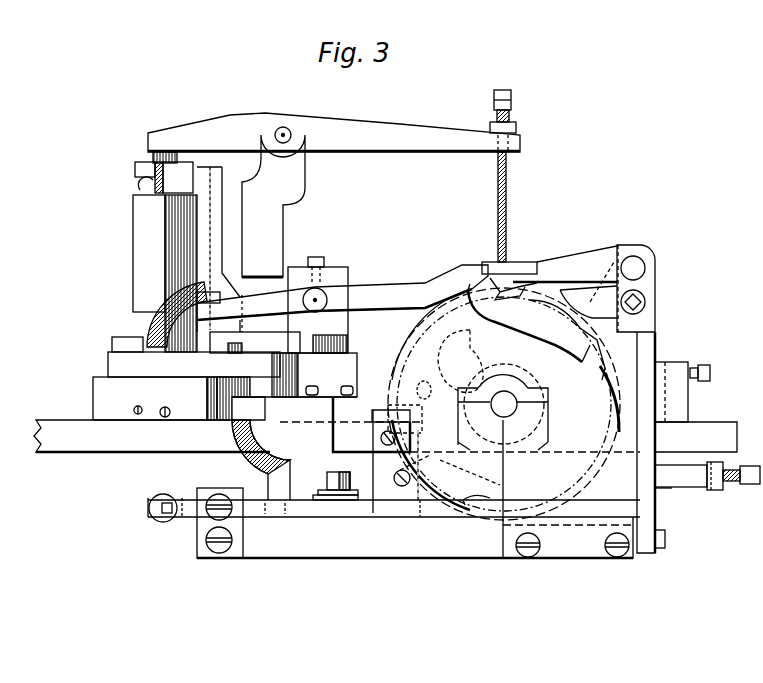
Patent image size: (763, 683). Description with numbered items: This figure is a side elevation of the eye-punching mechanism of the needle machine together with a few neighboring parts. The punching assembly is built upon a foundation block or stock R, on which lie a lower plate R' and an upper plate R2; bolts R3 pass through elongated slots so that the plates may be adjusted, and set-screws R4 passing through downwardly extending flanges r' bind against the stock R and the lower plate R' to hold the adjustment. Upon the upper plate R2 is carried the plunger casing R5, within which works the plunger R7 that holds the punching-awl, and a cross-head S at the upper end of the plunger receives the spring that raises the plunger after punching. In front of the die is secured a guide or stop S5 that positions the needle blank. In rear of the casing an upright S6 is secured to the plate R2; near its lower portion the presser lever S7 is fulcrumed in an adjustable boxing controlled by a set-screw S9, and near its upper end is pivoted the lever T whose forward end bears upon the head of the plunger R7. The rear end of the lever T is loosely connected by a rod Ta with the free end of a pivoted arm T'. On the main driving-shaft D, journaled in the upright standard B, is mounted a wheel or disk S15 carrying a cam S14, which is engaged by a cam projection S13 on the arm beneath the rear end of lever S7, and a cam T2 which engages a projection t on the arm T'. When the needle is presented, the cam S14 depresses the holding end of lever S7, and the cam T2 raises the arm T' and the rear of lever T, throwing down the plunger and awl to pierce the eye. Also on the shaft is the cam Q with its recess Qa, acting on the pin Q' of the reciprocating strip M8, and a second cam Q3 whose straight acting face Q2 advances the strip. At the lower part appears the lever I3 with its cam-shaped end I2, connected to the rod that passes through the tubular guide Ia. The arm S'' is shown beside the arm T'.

The lever T is at (334, 132).
The rod Ta is at (488, 209).
The projection t is at (487, 272).
The upright S6 is at (275, 262).
The set-screw S9 is at (320, 258).
The guide or stop S5 is at (303, 289).
The lever S7 is at (342, 292).
The cam projection S13 is at (513, 293).
The wheel or disk S15 is at (525, 323).
The cam S14 is at (574, 366).
The cam Q is at (504, 404).
The main driving-shaft D is at (508, 390).
The recess Qa is at (490, 357).
The second cam Q3 is at (420, 392).
The arm T' is at (565, 264).
The cam T2 is at (622, 288).
The arm S'' is at (588, 302).
The reciprocating strip M8 is at (337, 436).
The lower plate R' is at (155, 398).
The downwardly extending flange r' is at (167, 398).
The upper plate R2 is at (194, 357).
The plunger casing R5 is at (170, 273).
The plunger R7 is at (150, 156).
The cross-head S is at (141, 177).
The bolt R3 is at (245, 339).
The set-screw R4 is at (314, 386).
The foundation block or stock R is at (321, 448).
The pin Q' is at (338, 477).
The straight acting face Q2 is at (382, 421).
The lever I3 is at (330, 510).
The tubular guide Ia is at (163, 522).
The cam-shaped end I2 is at (476, 489).
The upright standard B is at (415, 489).